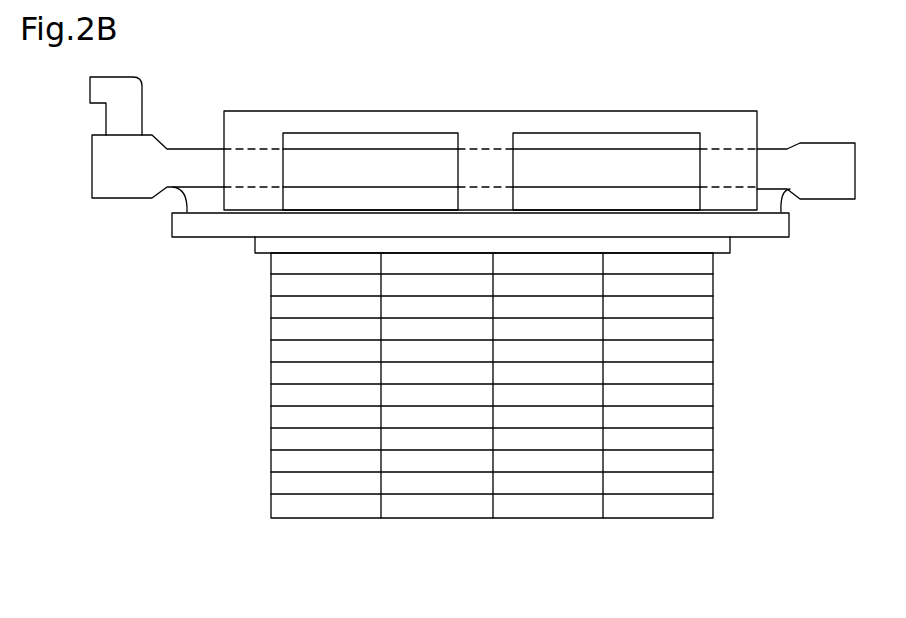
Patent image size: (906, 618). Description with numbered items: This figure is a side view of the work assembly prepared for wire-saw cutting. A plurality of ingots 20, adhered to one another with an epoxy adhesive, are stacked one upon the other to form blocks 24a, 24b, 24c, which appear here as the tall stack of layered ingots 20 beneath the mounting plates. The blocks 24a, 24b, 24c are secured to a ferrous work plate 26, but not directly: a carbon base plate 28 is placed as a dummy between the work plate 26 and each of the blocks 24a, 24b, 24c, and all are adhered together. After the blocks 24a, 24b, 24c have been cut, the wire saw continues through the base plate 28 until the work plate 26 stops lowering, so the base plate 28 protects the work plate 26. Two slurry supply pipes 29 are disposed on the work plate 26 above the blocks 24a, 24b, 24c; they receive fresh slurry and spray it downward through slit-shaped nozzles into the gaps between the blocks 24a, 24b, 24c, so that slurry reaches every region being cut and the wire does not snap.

The slurry supply pipe 29 is at (193, 148).
The work plate 26 is at (790, 225).
The base plate 28 is at (731, 250).
The ingot 20 is at (275, 505).
The block 24a is at (525, 522).
The block 24b is at (492, 385).
The block 24c is at (492, 385).